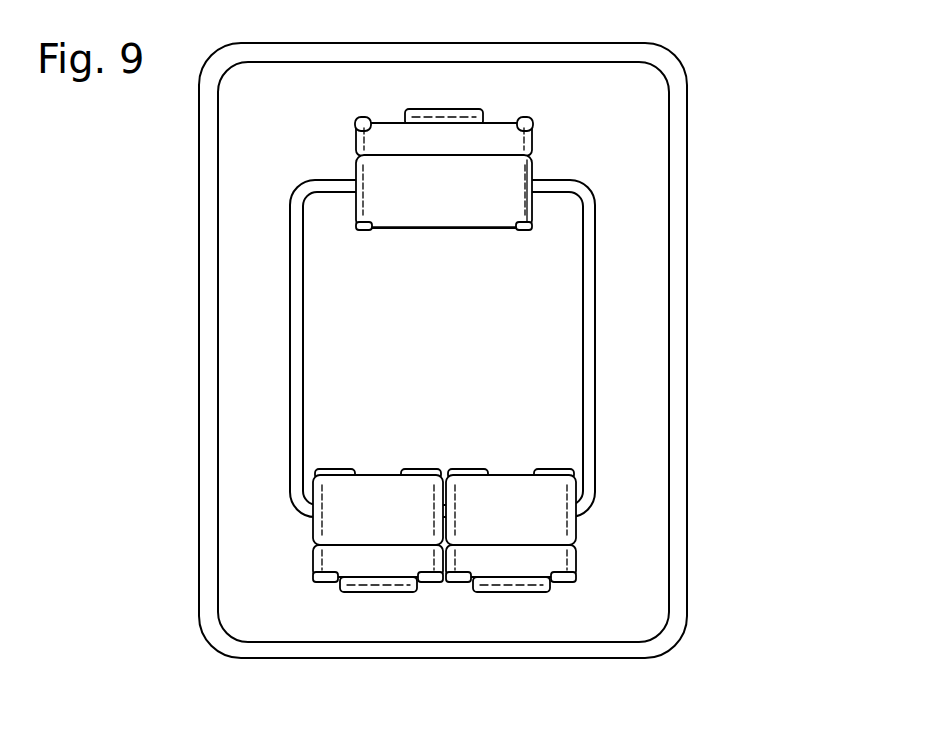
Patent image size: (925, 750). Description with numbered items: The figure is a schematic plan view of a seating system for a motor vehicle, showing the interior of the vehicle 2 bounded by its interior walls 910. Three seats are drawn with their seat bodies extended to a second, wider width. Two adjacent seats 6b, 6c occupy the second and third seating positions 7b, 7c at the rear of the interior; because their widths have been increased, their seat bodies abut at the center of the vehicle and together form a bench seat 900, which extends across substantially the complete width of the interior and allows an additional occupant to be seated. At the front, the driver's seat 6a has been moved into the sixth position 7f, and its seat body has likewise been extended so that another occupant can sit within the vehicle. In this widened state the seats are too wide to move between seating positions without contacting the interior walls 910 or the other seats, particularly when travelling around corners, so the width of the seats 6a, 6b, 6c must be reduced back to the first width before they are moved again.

The vehicle 2 is at (495, 337).
The interior walls 910 is at (670, 375).
The bench seat 900 is at (446, 436).
The driver's seat 6a is at (456, 195).
The seat 6b is at (295, 513).
The seat 6c is at (591, 507).
The sixth position 7f is at (533, 210).
The second seating position 7b is at (313, 562).
The third seating position 7c is at (577, 558).